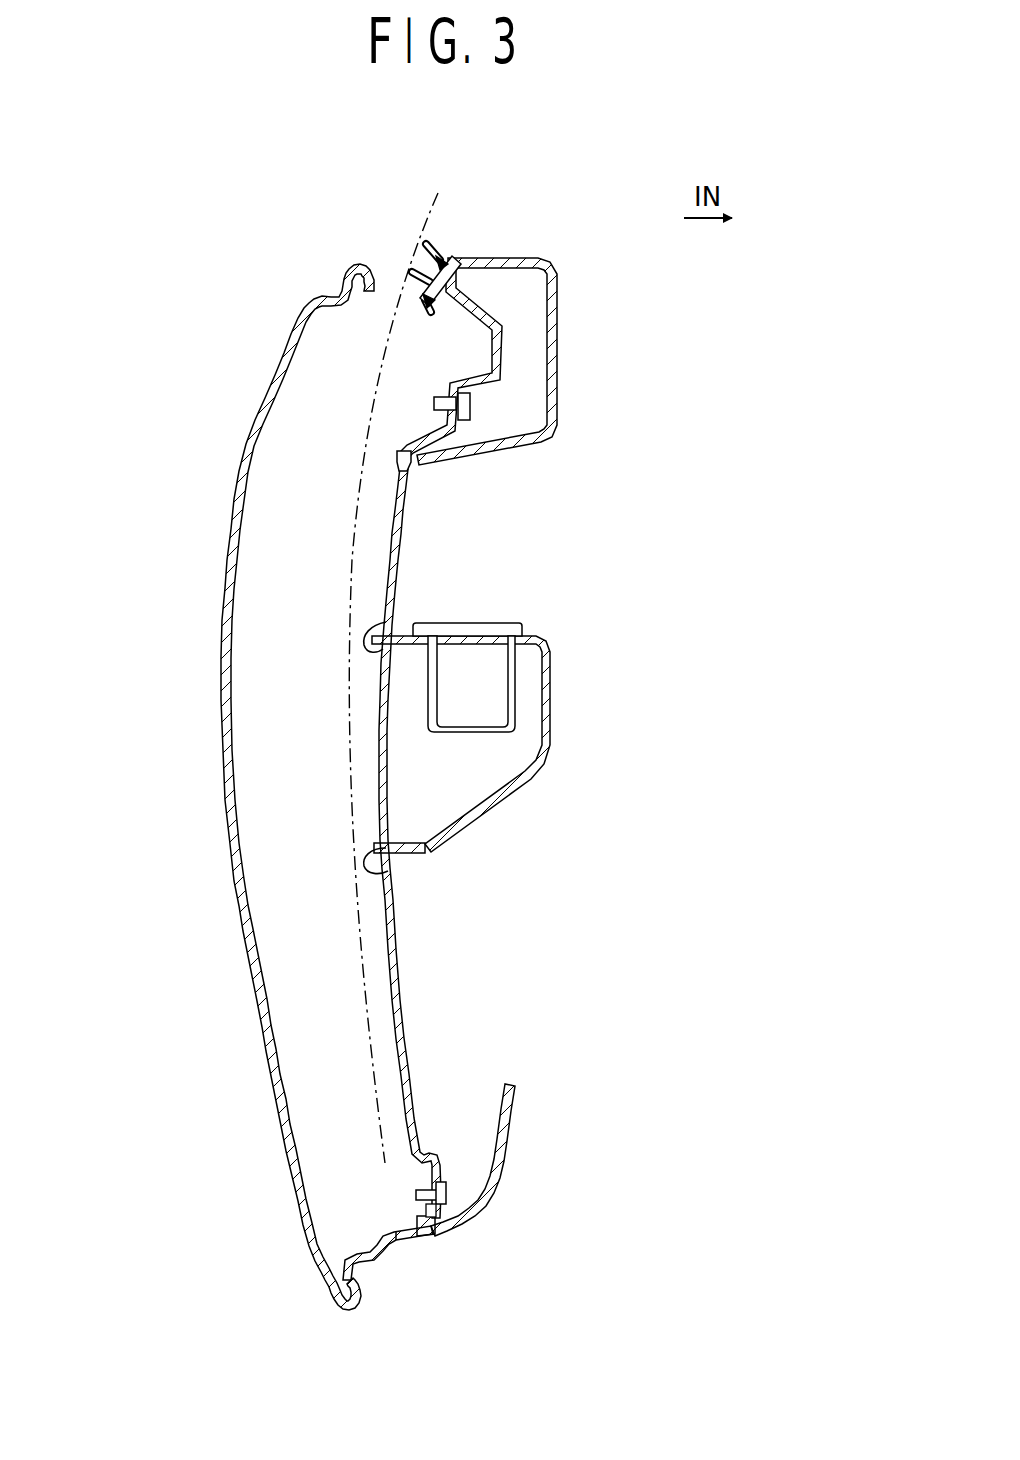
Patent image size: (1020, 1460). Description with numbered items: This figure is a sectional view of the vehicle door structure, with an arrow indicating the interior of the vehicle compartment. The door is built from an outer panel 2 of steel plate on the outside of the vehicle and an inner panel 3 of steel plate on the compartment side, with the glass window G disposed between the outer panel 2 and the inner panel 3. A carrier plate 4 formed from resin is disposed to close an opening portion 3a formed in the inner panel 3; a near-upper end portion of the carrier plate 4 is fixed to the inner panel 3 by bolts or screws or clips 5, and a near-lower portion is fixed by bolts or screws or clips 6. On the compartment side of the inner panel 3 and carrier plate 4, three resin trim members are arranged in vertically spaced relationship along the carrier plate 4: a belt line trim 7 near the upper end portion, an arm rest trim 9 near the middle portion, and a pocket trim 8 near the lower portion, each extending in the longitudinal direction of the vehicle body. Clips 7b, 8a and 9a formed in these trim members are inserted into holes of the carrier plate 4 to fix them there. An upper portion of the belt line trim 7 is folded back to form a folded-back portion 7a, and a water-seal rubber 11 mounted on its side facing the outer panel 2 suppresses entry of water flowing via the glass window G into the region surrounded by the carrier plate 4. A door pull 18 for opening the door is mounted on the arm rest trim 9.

The outer panel 2 is at (254, 410).
The inner panel 3 is at (406, 1266).
The opening portion 3a is at (433, 1178).
The carrier plate 4 is at (402, 1000).
The bolts or screws or clips 5 is at (468, 405).
The bolts or screws or clips 6 is at (443, 1193).
The belt line trim 7 is at (502, 364).
The folded-back portion 7a is at (453, 286).
The clip 7b is at (410, 472).
The pocket trim 8 is at (487, 1177).
The clip 8a is at (430, 1232).
The arm rest trim 9 is at (480, 731).
The clip 9a is at (384, 622).
The water-seal rubber 11 is at (445, 240).
The door pull 18 is at (490, 624).
The glass window G is at (410, 250).